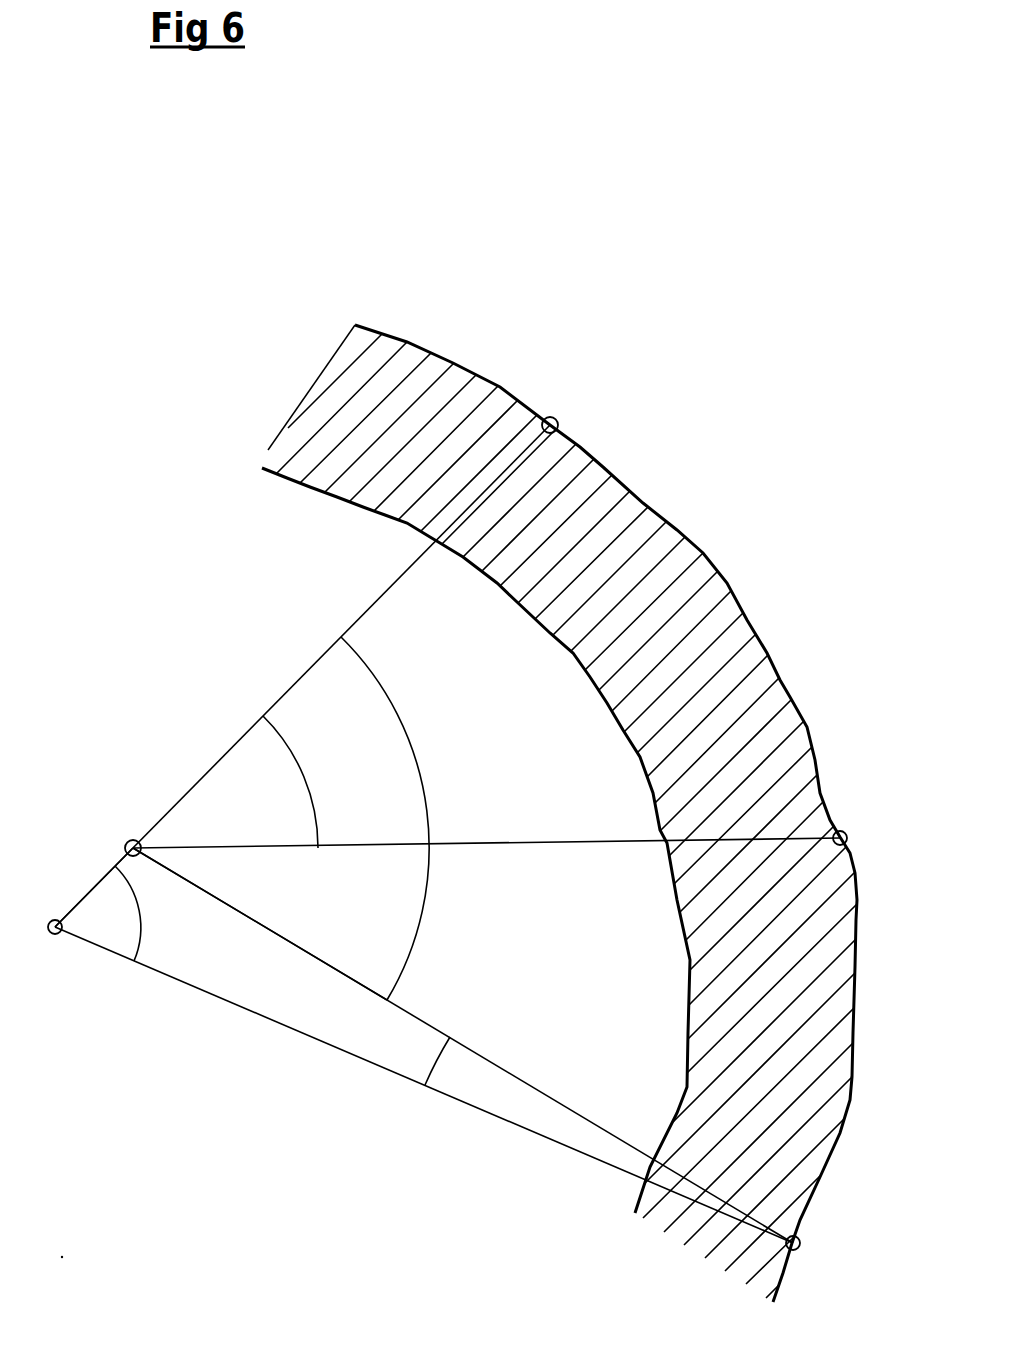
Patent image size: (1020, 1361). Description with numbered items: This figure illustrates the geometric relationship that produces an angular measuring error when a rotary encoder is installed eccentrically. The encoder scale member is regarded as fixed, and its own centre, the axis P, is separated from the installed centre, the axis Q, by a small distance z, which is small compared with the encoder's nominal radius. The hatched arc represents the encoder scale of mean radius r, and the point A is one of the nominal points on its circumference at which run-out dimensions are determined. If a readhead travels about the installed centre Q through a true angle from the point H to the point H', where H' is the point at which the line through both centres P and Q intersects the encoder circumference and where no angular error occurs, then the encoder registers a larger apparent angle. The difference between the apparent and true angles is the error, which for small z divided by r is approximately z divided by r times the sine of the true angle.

The axis P is at (122, 832).
The axis Q is at (42, 910).
The point A is at (856, 839).
The point H is at (814, 1257).
The point H' is at (569, 408).
The encoder mean radius r is at (260, 924).
The distance z is at (94, 887).